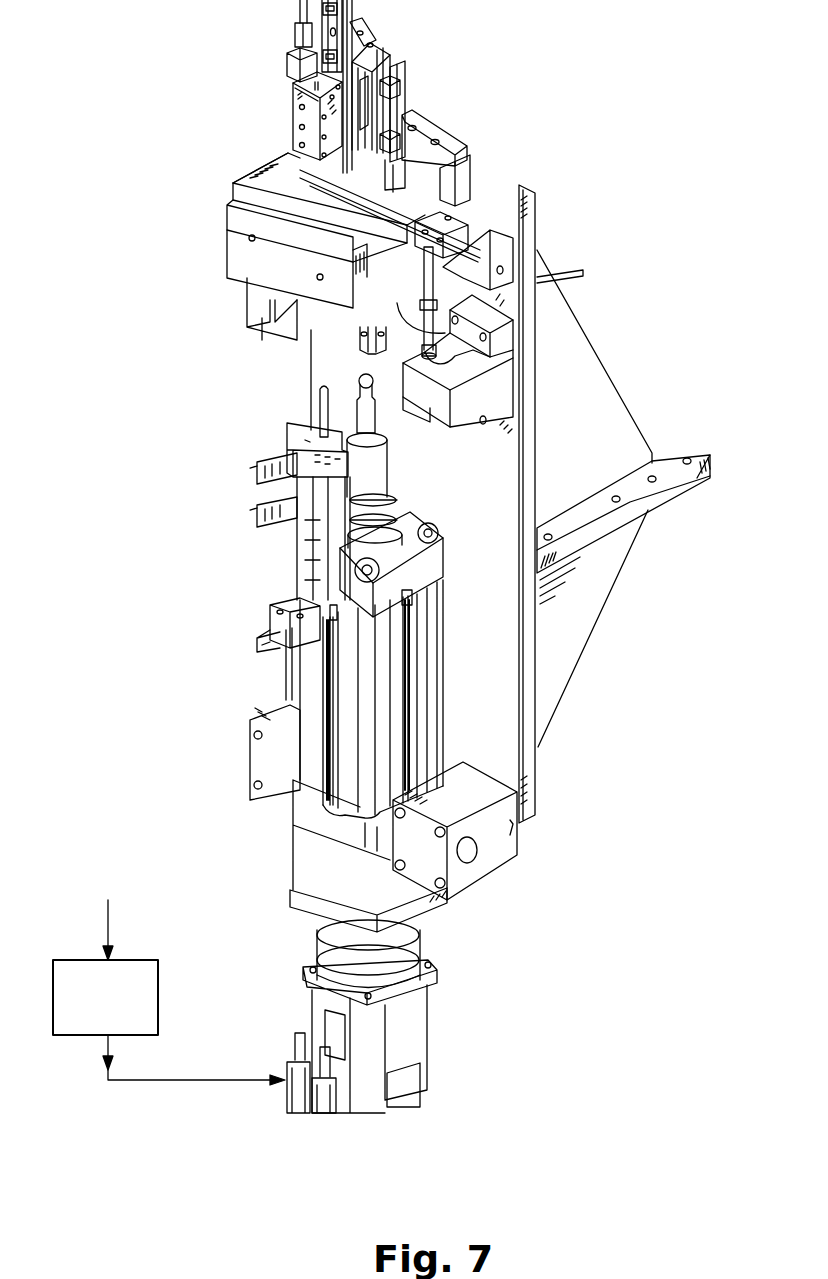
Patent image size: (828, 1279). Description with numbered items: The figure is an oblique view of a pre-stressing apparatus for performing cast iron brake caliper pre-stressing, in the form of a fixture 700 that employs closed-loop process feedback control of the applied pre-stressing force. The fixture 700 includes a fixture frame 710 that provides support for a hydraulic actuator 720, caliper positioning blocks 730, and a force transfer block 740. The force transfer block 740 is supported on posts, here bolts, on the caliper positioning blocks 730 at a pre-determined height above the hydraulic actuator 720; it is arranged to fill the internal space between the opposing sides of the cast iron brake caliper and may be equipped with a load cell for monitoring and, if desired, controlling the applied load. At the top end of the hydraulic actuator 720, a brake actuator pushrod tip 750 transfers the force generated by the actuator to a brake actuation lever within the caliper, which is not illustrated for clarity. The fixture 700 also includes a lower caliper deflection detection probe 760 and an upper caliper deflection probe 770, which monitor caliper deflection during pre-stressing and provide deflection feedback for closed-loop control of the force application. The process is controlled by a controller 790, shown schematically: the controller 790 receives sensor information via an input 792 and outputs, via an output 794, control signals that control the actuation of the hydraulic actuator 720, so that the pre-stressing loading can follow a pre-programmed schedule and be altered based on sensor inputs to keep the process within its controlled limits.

The fixture 700 is at (542, 129).
The fixture frame 710 is at (486, 355).
The hydraulic actuator 720 is at (318, 685).
The caliper positioning blocks 730 is at (518, 387).
The force transfer block 740 is at (230, 240).
The brake actuator pushrod tip 750 is at (352, 380).
The lower caliper deflection detection probe 760 is at (321, 393).
The upper caliper deflection probe 770 is at (283, 172).
The controller 790 is at (118, 1014).
The input 792 is at (135, 930).
The output 794 is at (164, 1061).